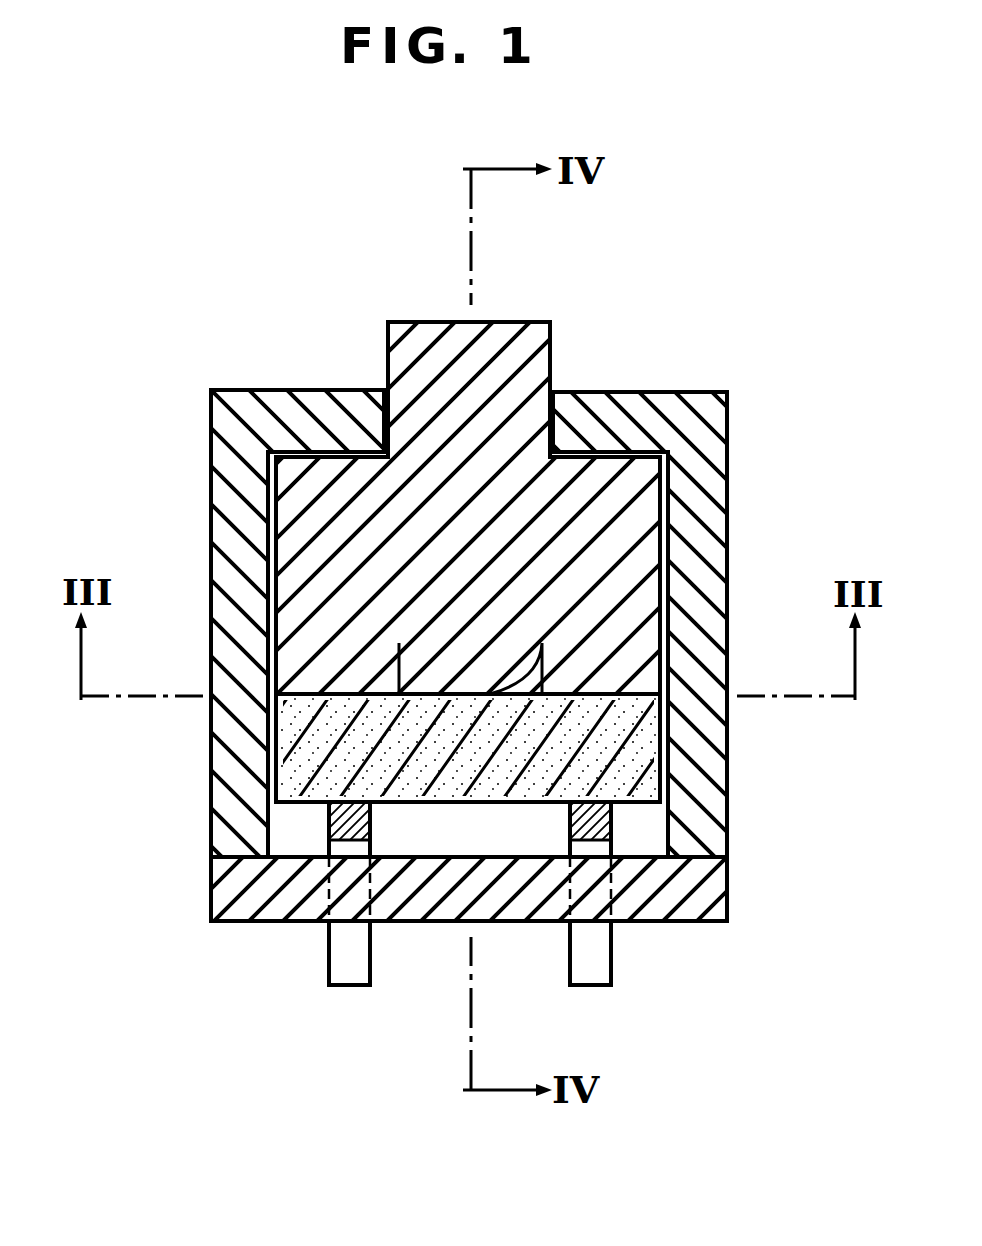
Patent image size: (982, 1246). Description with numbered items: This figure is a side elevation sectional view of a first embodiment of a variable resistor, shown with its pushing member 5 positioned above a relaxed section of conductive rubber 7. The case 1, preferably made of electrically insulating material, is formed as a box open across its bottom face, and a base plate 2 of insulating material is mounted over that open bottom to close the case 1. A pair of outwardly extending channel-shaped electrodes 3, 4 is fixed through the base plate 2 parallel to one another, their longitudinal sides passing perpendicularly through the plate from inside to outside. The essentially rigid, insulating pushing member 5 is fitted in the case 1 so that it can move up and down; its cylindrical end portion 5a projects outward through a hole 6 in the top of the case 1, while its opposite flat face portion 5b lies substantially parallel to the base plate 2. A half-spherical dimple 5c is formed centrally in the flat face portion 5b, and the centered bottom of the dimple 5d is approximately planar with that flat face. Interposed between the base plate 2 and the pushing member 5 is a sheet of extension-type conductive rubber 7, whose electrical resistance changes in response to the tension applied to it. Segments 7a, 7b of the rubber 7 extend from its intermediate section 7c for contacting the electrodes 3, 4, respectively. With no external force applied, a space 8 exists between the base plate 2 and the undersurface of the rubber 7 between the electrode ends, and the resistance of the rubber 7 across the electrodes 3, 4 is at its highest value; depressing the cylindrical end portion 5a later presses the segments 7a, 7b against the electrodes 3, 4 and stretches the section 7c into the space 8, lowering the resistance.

The case 1 is at (224, 477).
The base plate 2 is at (220, 888).
The electrode 3 is at (347, 978).
The electrode 4 is at (588, 978).
The pushing member 5 is at (640, 537).
The cylindrical end portion 5a is at (513, 340).
The flat face portion 5b is at (610, 715).
The dimple 5c is at (450, 692).
The bottom of dimple 5d is at (487, 695).
The hole 6 is at (387, 417).
The conductive rubber 7 is at (630, 767).
The rubber segment 7a is at (330, 838).
The rubber segment 7b is at (612, 838).
The intermediate section of rubber 7c is at (481, 795).
The space 8 is at (513, 833).